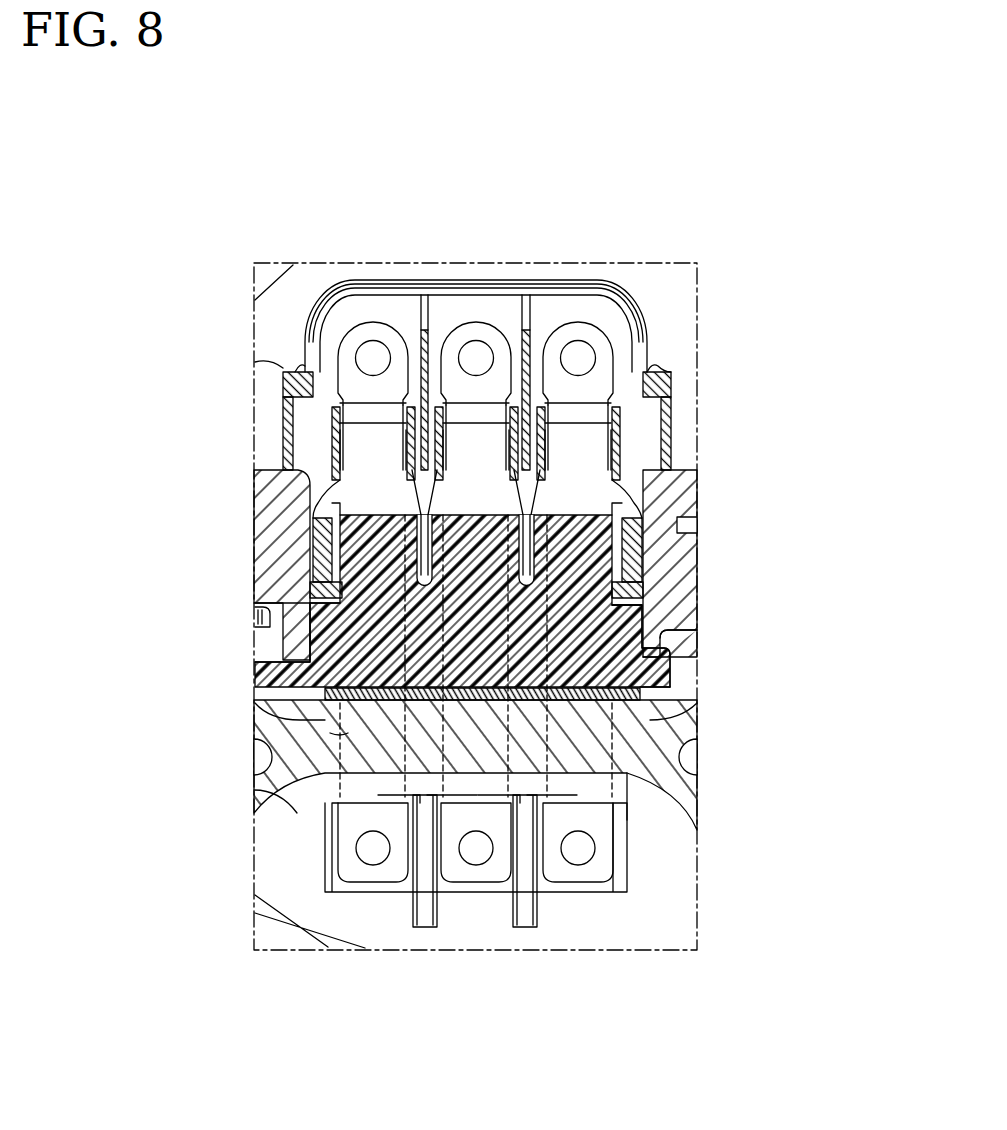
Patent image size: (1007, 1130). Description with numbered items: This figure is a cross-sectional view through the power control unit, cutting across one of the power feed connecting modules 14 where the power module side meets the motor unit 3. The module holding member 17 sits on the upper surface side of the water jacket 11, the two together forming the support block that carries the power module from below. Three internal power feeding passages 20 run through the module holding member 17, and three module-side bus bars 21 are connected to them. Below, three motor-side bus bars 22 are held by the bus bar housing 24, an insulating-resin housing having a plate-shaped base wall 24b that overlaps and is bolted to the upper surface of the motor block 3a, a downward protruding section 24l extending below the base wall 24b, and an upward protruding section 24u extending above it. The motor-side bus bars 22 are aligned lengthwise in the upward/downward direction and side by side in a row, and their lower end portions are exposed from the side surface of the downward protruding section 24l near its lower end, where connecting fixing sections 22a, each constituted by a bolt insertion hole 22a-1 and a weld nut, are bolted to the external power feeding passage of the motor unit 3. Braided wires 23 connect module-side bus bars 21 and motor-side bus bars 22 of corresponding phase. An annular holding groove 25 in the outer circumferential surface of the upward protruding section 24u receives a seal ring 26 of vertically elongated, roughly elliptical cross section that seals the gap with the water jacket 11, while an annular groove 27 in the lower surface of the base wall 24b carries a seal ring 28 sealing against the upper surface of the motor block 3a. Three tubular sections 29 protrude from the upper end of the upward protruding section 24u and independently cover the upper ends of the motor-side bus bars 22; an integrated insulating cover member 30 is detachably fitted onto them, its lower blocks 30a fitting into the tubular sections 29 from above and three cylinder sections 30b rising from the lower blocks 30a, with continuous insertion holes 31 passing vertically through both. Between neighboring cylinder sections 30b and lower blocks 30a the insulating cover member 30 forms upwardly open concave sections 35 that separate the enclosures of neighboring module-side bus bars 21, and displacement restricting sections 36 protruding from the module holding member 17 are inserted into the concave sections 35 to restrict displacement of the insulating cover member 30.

The motor unit 3 is at (703, 727).
The motor block 3a is at (665, 722).
The water jacket 11 is at (700, 490).
The power feed connecting module 14 is at (622, 363).
The module holding member 17 is at (637, 305).
The internal power feeding passage 20 is at (395, 300).
The module-side bus bar 21 is at (375, 333).
The motor-side bus bar 22 is at (392, 870).
The connecting fixing section 22a is at (450, 949).
The bolt insertion hole 22a-1 is at (378, 858).
The braided wire 23 is at (345, 432).
The bus bar housing 24 is at (243, 679).
The upward protruding section 24u is at (637, 590).
The base wall 24b is at (655, 685).
The downward protruding section 24l is at (630, 800).
The holding groove 25 is at (640, 612).
The seal ring 26 is at (655, 632).
The annular groove 27 is at (340, 702).
The seal ring 28 is at (340, 735).
The tubular section 29 is at (345, 530).
The insulating cover member 30 is at (633, 428).
The lower block 30a is at (320, 545).
The cylinder section 30b is at (335, 400).
The insertion hole 31 is at (417, 473).
The concave section 35 is at (432, 470).
The displacement restricting section 36 is at (422, 332).